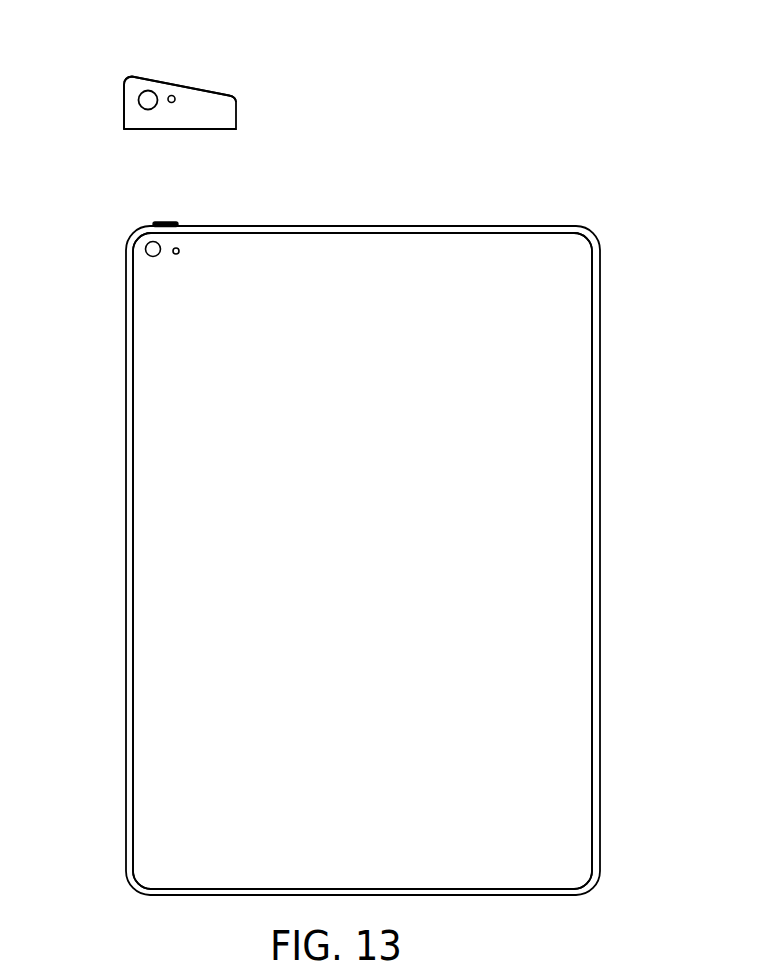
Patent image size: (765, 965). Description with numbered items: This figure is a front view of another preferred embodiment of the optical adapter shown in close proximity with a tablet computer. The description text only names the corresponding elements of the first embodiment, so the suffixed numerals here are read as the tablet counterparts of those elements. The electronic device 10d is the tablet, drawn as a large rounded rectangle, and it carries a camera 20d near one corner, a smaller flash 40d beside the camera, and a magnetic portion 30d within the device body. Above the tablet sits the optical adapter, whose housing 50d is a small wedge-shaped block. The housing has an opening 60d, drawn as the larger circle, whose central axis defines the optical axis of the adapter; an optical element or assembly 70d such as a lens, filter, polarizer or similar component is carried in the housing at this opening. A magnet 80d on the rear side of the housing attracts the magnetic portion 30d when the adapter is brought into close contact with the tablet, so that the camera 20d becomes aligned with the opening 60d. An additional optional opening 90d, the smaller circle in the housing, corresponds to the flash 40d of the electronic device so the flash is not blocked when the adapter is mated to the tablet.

The electronic device 10d is at (568, 566).
The camera 20d is at (145, 249).
The rear housing surface 30d is at (200, 247).
The flash 40d is at (174, 254).
The camera module 50d is at (237, 112).
The lens 60d is at (148, 90).
The module side wall 70d is at (138, 100).
The module top surface 80d is at (212, 113).
The light emitter 90d is at (172, 95).